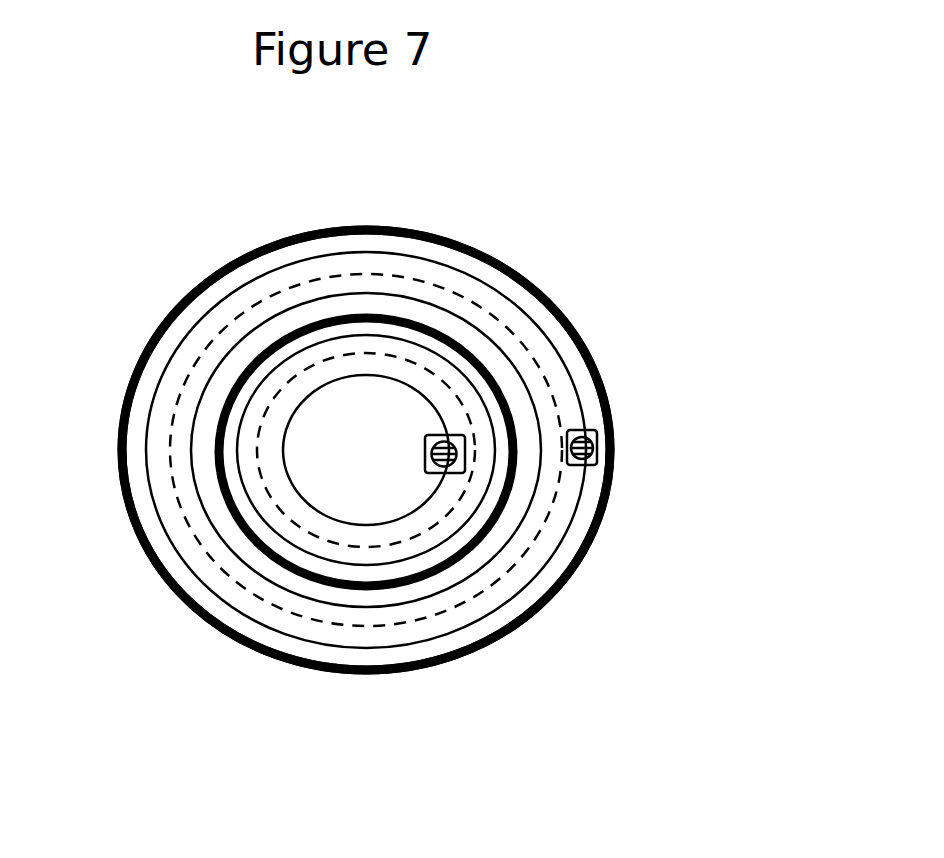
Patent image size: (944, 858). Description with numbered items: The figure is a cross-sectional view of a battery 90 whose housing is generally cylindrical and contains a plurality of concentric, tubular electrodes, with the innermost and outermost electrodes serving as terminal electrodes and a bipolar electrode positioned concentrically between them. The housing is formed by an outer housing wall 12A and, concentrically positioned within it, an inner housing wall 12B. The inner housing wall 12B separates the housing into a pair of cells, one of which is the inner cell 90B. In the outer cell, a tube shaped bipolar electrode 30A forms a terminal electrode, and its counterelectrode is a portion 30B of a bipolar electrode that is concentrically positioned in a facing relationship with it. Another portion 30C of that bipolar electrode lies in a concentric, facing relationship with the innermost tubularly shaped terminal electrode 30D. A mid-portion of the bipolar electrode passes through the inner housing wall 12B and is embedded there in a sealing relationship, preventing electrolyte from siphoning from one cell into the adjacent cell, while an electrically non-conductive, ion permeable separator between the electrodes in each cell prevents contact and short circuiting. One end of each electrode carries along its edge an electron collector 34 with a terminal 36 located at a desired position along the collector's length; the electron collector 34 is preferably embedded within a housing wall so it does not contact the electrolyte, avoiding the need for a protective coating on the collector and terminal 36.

The battery 90 is at (620, 178).
The cell 90B is at (359, 326).
The outer housing wall 12A is at (617, 333).
The inner housing wall 12B is at (240, 540).
The bipolar electrode 30A is at (545, 562).
The portion of bipolar electrode 30B is at (535, 512).
The portion of bipolar electrode 30C is at (527, 623).
The innermost tubularly shaped terminal electrode 30D is at (360, 523).
The electron collector 34 is at (597, 455).
The terminal 36 is at (597, 435).